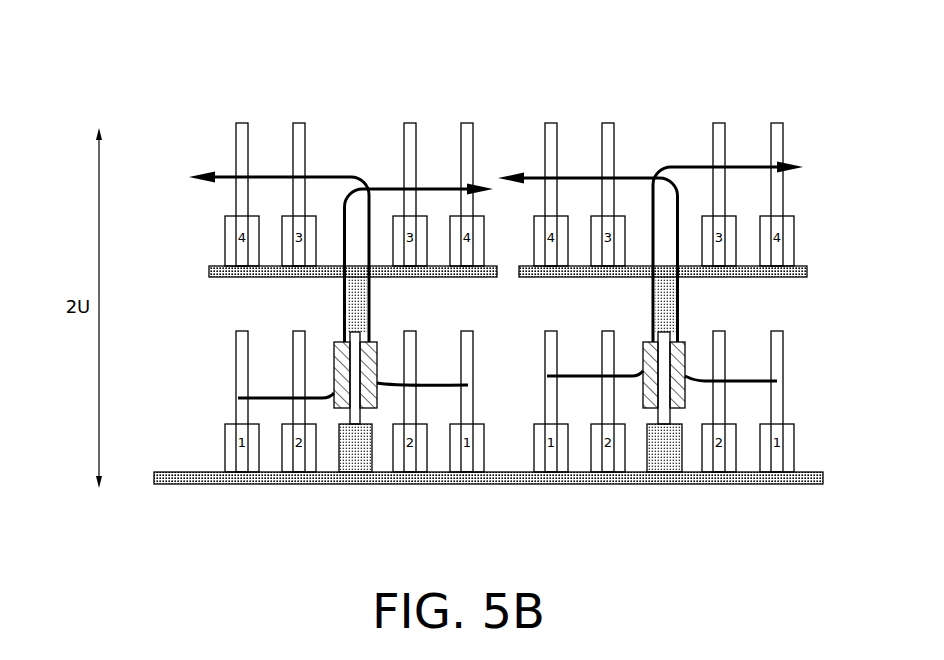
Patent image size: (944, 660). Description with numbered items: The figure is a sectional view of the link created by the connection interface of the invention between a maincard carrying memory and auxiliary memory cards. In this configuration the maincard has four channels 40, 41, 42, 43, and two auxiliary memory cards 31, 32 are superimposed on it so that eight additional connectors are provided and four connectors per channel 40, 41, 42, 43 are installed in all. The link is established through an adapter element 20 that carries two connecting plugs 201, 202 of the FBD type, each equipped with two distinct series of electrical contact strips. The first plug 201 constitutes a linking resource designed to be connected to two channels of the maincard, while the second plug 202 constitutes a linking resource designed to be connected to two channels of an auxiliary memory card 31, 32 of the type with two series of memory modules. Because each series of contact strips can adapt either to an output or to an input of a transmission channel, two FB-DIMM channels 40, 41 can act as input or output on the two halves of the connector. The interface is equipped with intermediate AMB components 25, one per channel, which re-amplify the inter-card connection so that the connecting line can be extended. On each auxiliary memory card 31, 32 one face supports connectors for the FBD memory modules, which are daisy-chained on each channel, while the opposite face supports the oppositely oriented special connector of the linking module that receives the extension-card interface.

The adapter element 20 is at (638, 327).
The intermediate AMB component 25 is at (343, 366).
The auxiliary memory card 31 is at (208, 263).
The auxiliary memory card 32 is at (782, 280).
The FB-DIMM channel 40 is at (628, 176).
The FB-DIMM channel 41 is at (745, 165).
The channel 42 is at (428, 186).
The channel 43 is at (330, 175).
The first connecting plug 201 is at (348, 486).
The second connecting plug 202 is at (343, 292).